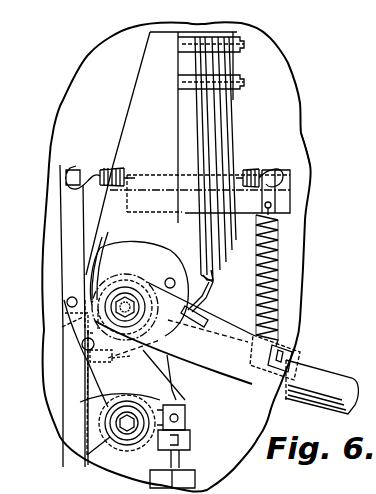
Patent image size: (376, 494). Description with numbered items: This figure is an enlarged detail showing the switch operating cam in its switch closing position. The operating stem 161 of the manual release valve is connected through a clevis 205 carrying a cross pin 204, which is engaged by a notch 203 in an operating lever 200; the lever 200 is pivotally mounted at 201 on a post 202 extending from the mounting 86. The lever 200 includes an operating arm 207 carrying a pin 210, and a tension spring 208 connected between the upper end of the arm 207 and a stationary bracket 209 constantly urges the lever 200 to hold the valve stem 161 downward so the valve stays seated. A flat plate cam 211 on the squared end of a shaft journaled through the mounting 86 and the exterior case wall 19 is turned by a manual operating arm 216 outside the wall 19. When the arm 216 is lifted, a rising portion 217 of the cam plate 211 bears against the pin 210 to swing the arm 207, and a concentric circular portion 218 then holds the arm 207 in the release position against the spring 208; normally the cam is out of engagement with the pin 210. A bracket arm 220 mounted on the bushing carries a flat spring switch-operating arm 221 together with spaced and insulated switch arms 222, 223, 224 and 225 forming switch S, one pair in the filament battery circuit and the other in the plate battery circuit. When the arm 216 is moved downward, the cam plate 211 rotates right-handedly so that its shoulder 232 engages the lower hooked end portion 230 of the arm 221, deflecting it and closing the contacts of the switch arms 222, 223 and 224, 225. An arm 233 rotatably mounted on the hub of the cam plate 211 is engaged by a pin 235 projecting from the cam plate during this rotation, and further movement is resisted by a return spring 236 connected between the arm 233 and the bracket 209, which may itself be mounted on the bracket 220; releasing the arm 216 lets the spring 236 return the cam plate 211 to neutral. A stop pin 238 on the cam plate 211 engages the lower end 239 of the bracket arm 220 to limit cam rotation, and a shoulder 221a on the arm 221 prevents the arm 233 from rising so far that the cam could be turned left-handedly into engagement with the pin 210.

The exterior case wall 19 is at (300, 143).
The mounting 86 is at (88, 453).
The operating stem 161 is at (185, 475).
The operating lever 200 is at (93, 404).
The pivot 201 is at (130, 433).
The post 202 is at (87, 455).
The notch 203 is at (173, 390).
The cross pin 204 is at (188, 422).
The clevis 205 is at (190, 444).
The operating arm 207 is at (70, 224).
The tension spring 208 is at (113, 143).
The stationary bracket 209 is at (288, 205).
The pin 210 is at (67, 302).
The flat plate cam 211 is at (148, 268).
The manual operating arm 216 is at (318, 372).
The rising portion 217 is at (100, 262).
The concentric circular portion 218 is at (150, 265).
The bracket arm 220 is at (146, 90).
The flat spring switch-operating arm 221 is at (200, 124).
The shoulder 221a is at (206, 286).
The switch arm 222 is at (208, 134).
The switch arm 223 is at (216, 146).
The switch arm 224 is at (228, 125).
The switch arm 225 is at (232, 138).
The lower hooked end portion 230 is at (205, 300).
The shoulder 232 is at (186, 326).
The arm 233 is at (236, 368).
The pin 235 is at (173, 280).
The return spring 236 is at (282, 296).
The stop pin 238 is at (88, 362).
The lower end 239 is at (88, 375).
The switch S is at (280, 254).